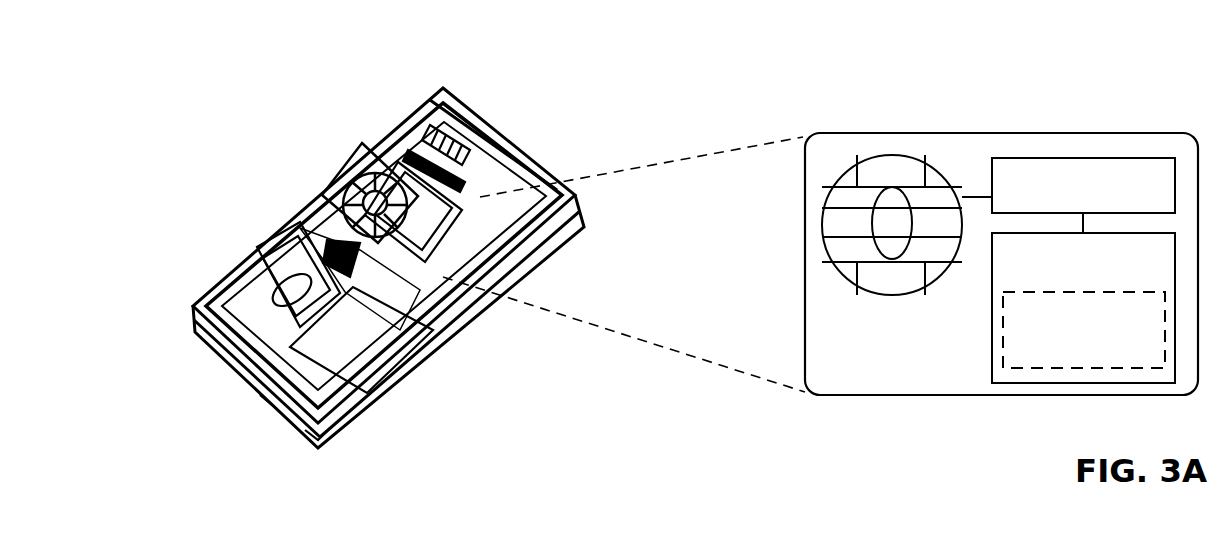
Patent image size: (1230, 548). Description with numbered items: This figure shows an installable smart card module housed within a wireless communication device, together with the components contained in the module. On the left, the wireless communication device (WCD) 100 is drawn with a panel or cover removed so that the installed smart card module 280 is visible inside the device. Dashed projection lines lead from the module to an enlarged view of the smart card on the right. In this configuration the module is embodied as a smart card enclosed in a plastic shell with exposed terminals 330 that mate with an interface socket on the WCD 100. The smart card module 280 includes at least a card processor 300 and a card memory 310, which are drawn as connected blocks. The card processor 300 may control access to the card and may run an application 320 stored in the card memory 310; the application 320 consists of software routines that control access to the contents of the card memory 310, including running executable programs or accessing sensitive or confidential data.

The wireless communication device 100 is at (168, 75).
The smart card module 280 is at (345, 152).
The exposed terminals 330 is at (818, 230).
The card processor 300 is at (1083, 185).
The card memory 310 is at (1083, 308).
The application 320 is at (1084, 330).